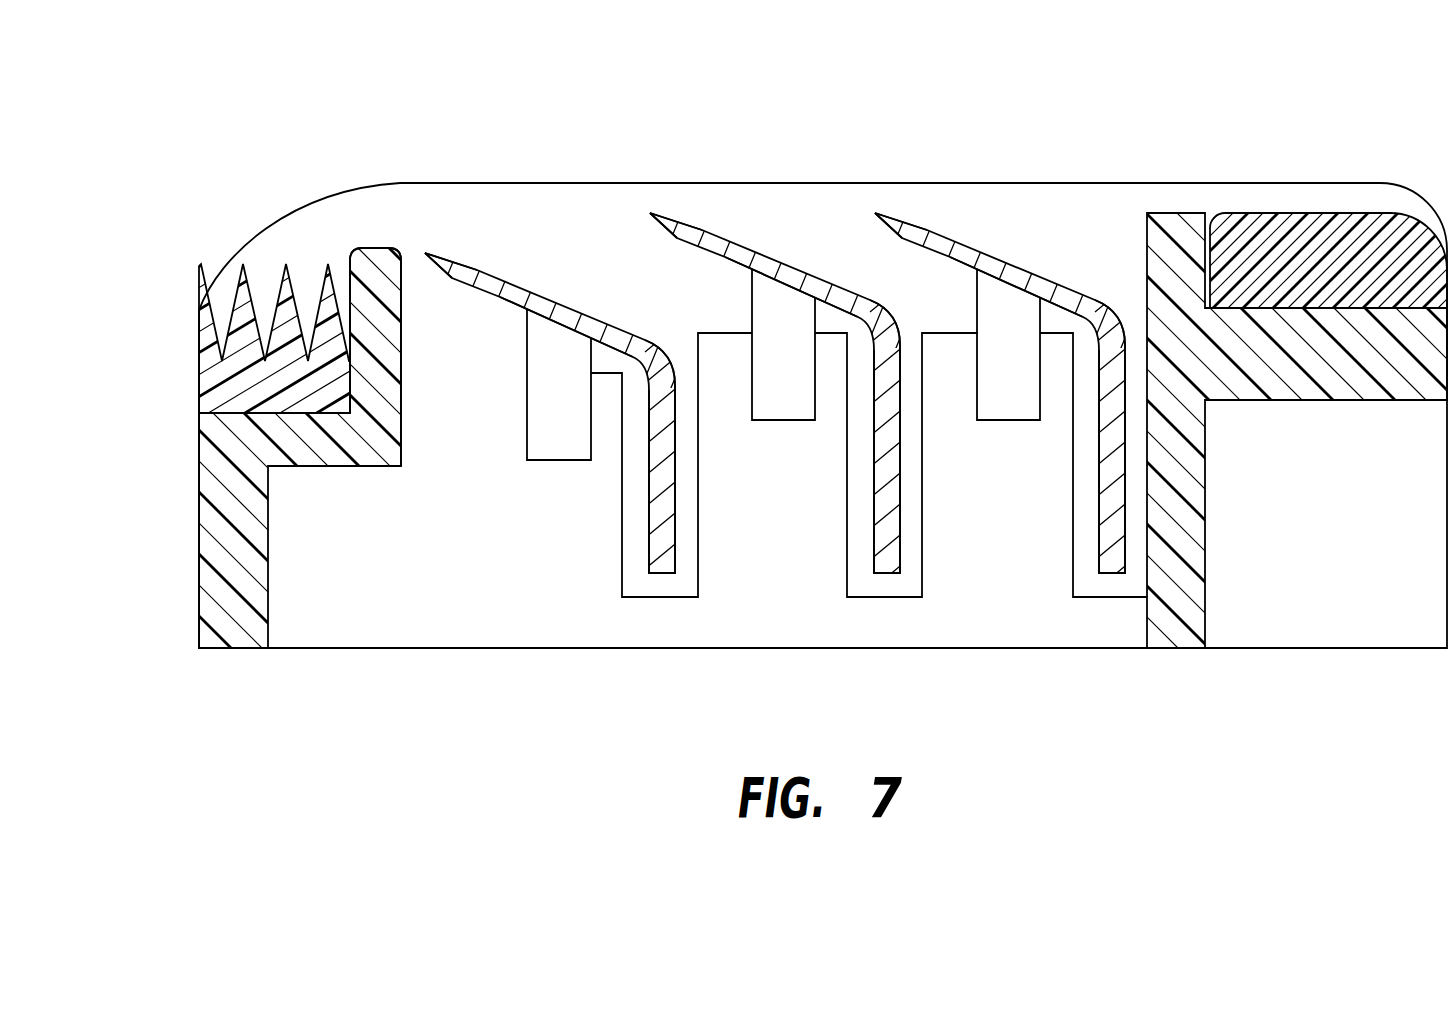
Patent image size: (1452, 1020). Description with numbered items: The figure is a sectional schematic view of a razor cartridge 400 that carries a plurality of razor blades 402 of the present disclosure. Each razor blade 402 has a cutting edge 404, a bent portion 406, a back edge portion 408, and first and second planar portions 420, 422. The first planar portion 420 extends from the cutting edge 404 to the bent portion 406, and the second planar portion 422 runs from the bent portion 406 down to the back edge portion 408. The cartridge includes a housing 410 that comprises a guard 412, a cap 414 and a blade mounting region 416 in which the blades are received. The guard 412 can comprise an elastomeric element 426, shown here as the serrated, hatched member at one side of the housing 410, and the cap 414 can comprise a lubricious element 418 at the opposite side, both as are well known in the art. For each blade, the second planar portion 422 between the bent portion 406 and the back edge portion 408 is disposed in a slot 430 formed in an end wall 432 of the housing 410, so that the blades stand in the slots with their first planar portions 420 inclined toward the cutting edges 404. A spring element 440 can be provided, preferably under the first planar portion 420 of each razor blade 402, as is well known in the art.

The razor cartridge 400 is at (447, 152).
The razor blades 402 is at (508, 272).
The cutting edges 404 is at (425, 253).
The bent portions 406 is at (672, 348).
The back edge portions 408 is at (660, 574).
The housing 410 is at (440, 615).
The guard 412 is at (358, 247).
The cap 414 is at (1162, 213).
The blade mounting region 416 is at (762, 615).
The lubricious element 418 is at (1340, 213).
The first planar portion 420 is at (503, 302).
The second planar portion 422 is at (649, 513).
The elastomeric element 426 is at (285, 263).
The slot 430 is at (622, 555).
The end wall 432 is at (992, 615).
The spring element 440 is at (535, 416).